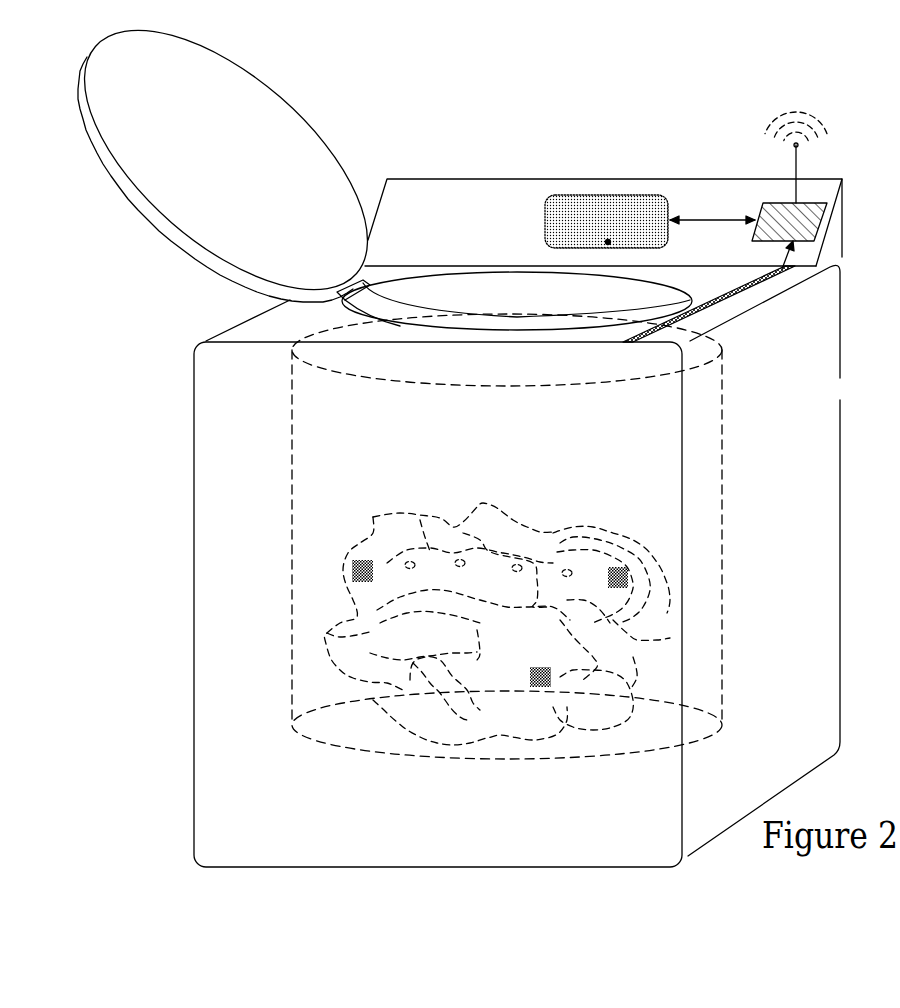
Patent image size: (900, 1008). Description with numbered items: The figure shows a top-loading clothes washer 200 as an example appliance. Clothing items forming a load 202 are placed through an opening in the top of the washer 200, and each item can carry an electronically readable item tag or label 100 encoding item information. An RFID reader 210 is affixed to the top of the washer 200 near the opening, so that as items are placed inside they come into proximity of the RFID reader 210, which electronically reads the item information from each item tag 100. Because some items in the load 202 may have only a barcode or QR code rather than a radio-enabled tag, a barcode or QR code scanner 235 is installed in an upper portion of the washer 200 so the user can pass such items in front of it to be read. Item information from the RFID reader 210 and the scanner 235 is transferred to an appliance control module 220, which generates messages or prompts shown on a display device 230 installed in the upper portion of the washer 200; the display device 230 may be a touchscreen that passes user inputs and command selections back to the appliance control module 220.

The top-loading clothes washer 200 is at (453, 178).
The display device 230 is at (573, 193).
The barcode or QR code scanner 235 is at (603, 243).
The appliance control module 220 is at (805, 200).
The RFID reader 210 is at (713, 310).
The load 202 is at (497, 508).
The electronically readable item tag 100 is at (356, 560).